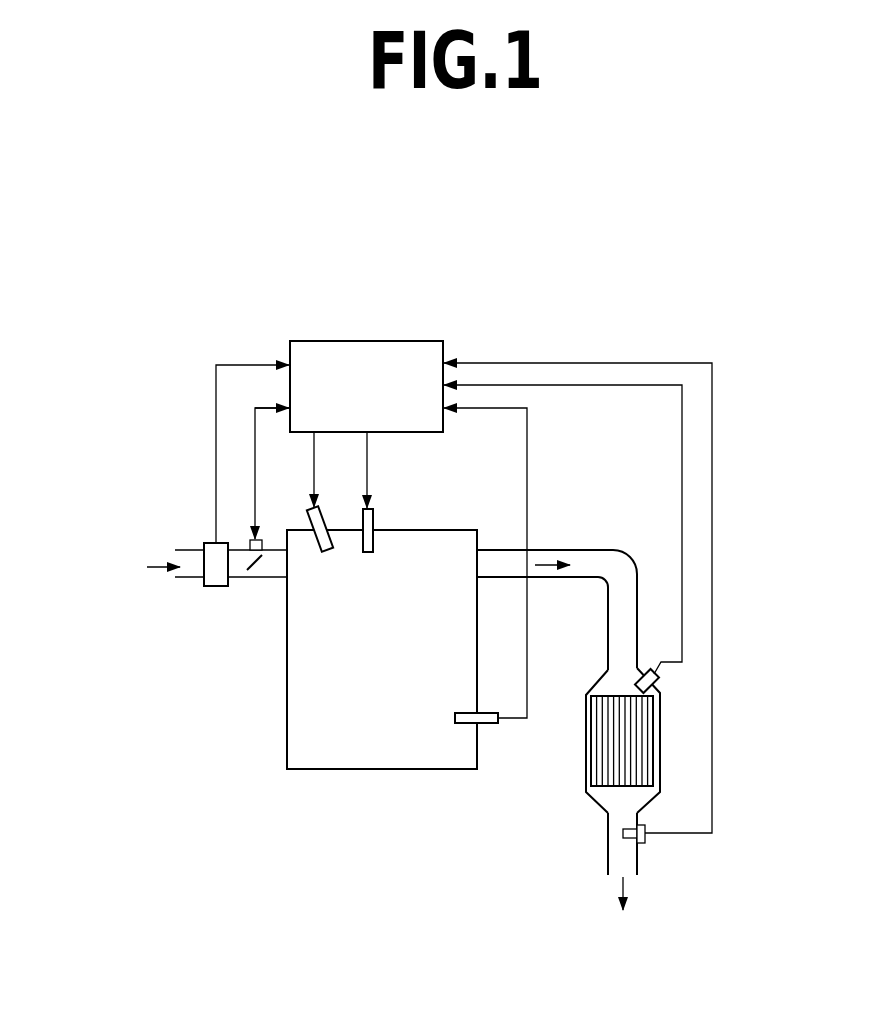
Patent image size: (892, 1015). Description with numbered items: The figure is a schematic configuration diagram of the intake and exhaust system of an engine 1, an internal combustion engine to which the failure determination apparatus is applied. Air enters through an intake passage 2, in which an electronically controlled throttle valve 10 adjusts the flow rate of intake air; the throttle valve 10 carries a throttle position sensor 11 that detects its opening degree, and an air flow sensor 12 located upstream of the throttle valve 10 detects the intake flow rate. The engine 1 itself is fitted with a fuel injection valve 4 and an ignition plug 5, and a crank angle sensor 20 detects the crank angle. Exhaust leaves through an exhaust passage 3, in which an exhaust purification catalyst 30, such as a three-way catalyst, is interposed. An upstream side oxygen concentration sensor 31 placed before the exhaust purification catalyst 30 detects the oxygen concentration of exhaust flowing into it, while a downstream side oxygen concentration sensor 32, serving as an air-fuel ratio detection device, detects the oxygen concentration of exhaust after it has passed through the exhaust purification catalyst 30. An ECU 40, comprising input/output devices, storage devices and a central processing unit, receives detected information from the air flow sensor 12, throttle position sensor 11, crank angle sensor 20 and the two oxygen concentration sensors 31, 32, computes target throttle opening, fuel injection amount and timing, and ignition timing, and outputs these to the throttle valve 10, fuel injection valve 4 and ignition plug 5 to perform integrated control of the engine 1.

The engine 1 is at (255, 713).
The intake passage 2 is at (278, 582).
The exhaust passage 3 is at (585, 547).
The fuel injection valve 4 is at (313, 512).
The ignition plug 5 is at (368, 520).
The throttle valve 10 is at (252, 583).
The throttle position sensor 11 is at (250, 537).
The air flow sensor 12 is at (205, 543).
The crank angle sensor 20 is at (488, 727).
The exhaust purification catalyst 30 is at (660, 745).
The upstream side oxygen concentration sensor 31 is at (645, 670).
The downstream side oxygen concentration sensor 32 is at (645, 840).
The ECU 40 is at (392, 340).